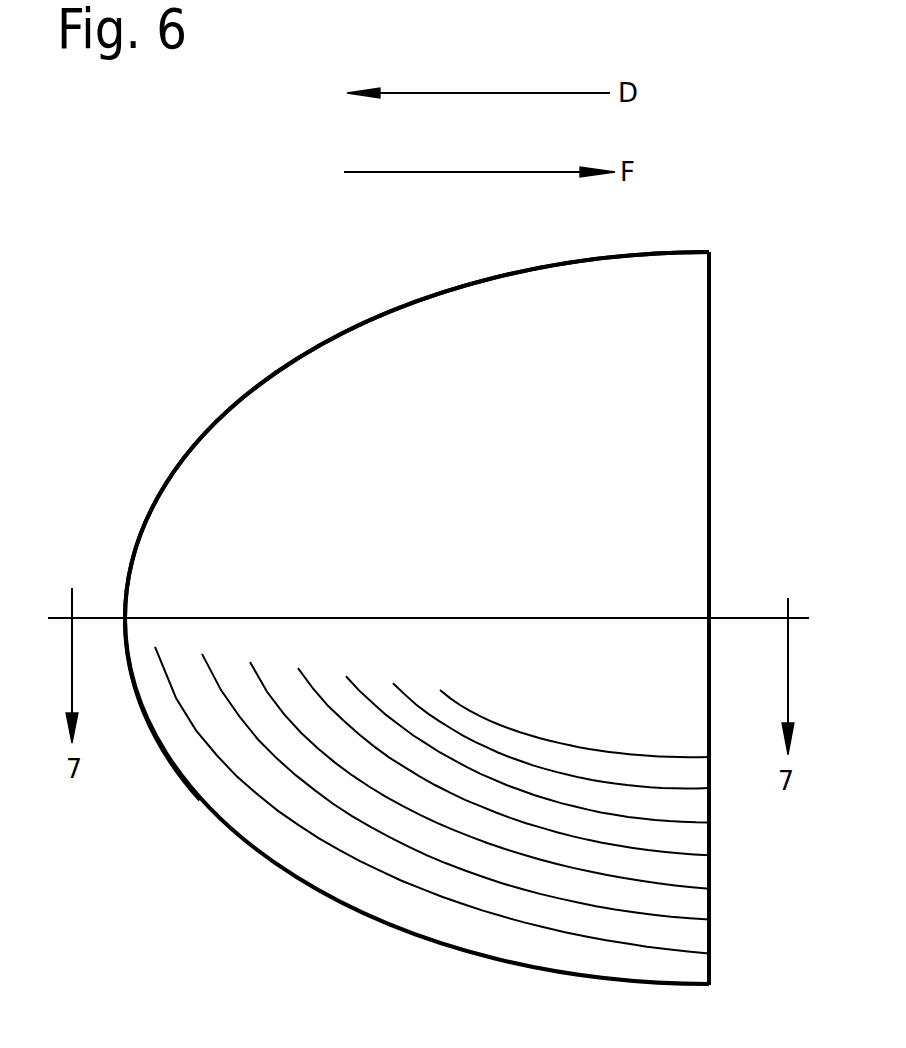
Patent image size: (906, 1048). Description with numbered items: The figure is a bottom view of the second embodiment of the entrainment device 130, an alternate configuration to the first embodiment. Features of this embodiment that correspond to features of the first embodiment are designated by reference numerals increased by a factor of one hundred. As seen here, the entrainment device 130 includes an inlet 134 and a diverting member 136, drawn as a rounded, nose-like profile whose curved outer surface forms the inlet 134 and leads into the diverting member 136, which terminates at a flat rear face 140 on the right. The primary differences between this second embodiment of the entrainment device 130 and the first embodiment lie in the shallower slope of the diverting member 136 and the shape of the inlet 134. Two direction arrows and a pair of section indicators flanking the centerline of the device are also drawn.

The entrainment device 130 is at (441, 577).
The inlet 134 is at (188, 453).
The diverting member 136 is at (420, 357).
The flat rear face 140 is at (712, 465).